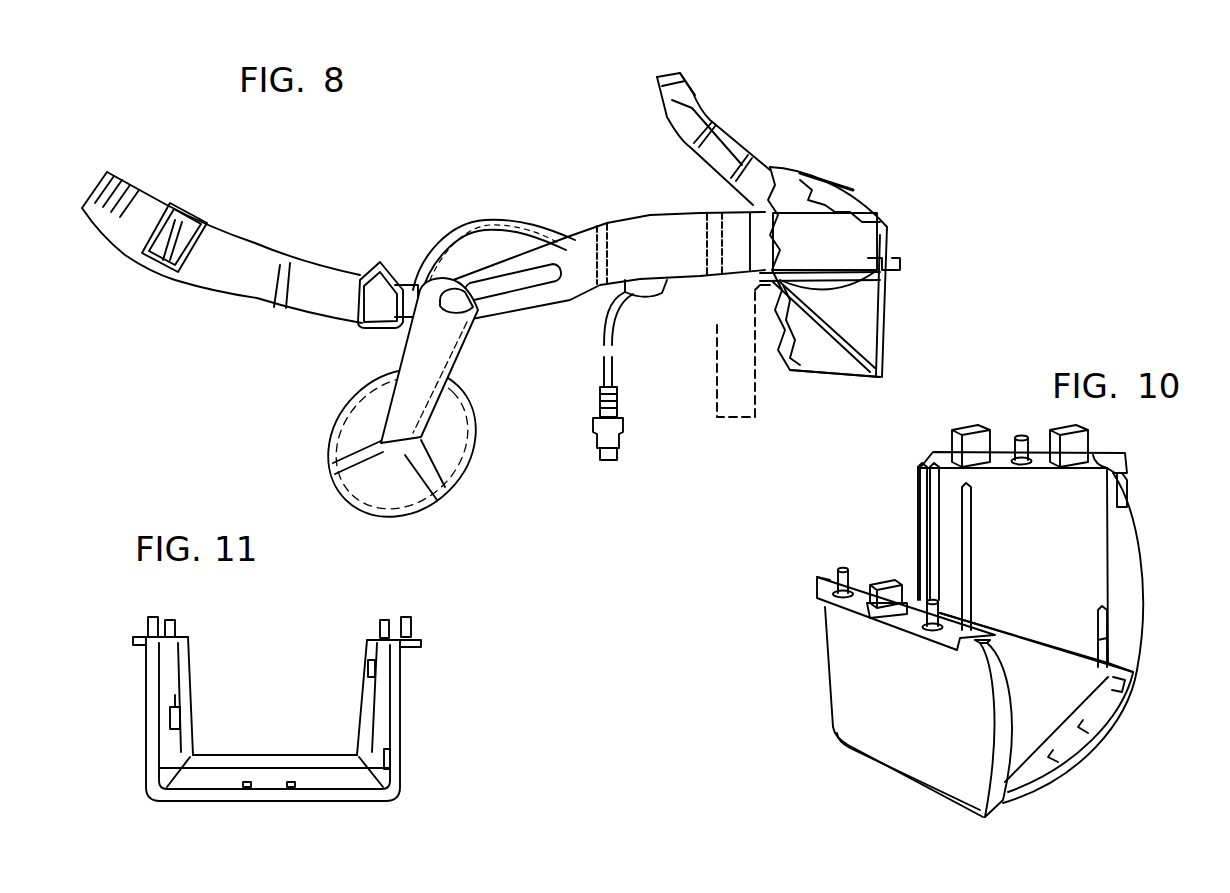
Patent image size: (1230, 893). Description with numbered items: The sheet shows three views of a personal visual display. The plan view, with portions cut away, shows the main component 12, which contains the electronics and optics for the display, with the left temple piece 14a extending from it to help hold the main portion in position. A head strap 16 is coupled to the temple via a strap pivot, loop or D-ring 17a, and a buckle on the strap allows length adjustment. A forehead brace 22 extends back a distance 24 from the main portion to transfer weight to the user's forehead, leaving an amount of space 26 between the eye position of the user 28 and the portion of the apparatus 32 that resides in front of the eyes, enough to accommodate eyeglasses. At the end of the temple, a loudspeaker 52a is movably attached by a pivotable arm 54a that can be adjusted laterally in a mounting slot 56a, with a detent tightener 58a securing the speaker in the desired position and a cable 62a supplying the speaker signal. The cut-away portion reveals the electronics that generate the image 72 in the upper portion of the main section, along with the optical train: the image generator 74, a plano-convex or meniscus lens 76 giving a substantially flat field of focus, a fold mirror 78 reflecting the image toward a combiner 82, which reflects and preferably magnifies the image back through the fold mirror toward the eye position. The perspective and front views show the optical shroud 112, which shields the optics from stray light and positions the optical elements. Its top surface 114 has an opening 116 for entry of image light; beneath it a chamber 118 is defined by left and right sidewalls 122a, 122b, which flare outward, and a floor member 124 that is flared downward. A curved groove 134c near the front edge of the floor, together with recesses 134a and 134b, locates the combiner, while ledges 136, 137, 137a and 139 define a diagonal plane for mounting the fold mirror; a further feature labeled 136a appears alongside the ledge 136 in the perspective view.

In FIG. 8, the main component 12 is at (890, 190).
In FIG. 8, the left temple piece 14a is at (665, 264).
In FIG. 8, the head strap 16 is at (232, 247).
In FIG. 8, the strap pivot, loop or D-ring 17a is at (370, 260).
In FIG. 8, the forehead brace 22 is at (677, 83).
In FIG. 8, the distance 24 is at (707, 93).
In FIG. 8, the amount of space 26 is at (737, 420).
In FIG. 8, the eye position of the user 28 is at (716, 325).
In FIG. 8, the portion of the apparatus in front of the eyes 32 is at (760, 303).
In FIG. 8, the left loudspeaker 52a is at (347, 437).
In FIG. 8, the pivotable arm 54a is at (450, 357).
In FIG. 8, the mounting slot 56a is at (527, 287).
In FIG. 8, the detent tightener 58a is at (457, 300).
In FIG. 8, the cable 62a is at (497, 222).
In FIG. 8, the image 72 is at (840, 247).
In FIG. 8, the image generator 74 is at (887, 260).
In FIG. 8, the plano-convex or meniscus lens 76 is at (843, 283).
In FIG. 8, the fold mirror 78 is at (853, 350).
In FIG. 8, the combiner 82 is at (887, 317).
In FIG. 8, the optical shroud 112 is at (797, 357).
In FIG. 10, the optical shroud 112 is at (833, 758).
In FIG. 10, the top surface 114 is at (817, 588).
In FIG. 10, the opening 116 is at (1105, 460).
In FIG. 10, the chamber 118 is at (1090, 557).
In FIG. 10, the left sidewall 122a is at (1052, 598).
In FIG. 11, the left sidewall 122a is at (380, 647).
In FIG. 10, the right sidewall 122b is at (903, 668).
In FIG. 11, the right sidewall 122b is at (170, 650).
In FIG. 10, the floor member 124 is at (1058, 697).
In FIG. 10, the recess 134a is at (1127, 480).
In FIG. 10, the recess 134b is at (983, 645).
In FIG. 10, the groove 134c is at (1125, 690).
In FIG. 11, the ledge 136 is at (368, 667).
In FIG. 10, the post 136a is at (963, 527).
In FIG. 11, the ledge 137 is at (390, 757).
In FIG. 10, the ledge 137a is at (1133, 650).
In FIG. 11, the ledge 139 is at (173, 727).